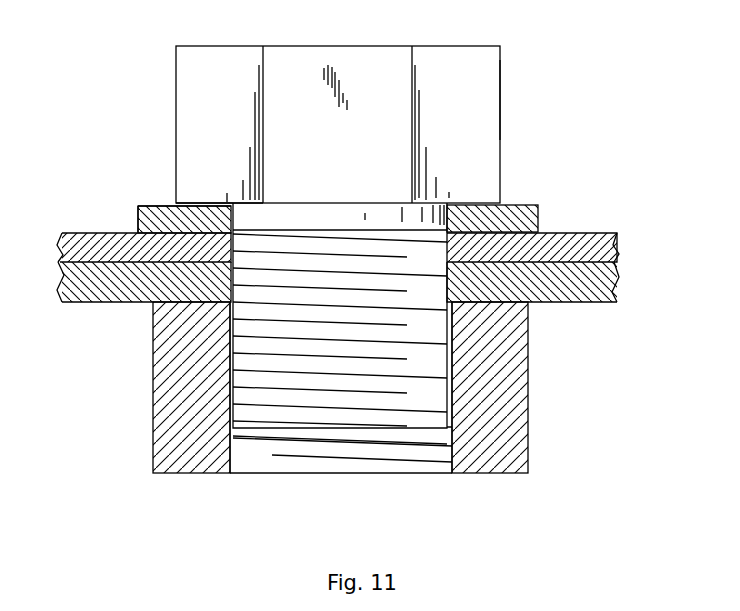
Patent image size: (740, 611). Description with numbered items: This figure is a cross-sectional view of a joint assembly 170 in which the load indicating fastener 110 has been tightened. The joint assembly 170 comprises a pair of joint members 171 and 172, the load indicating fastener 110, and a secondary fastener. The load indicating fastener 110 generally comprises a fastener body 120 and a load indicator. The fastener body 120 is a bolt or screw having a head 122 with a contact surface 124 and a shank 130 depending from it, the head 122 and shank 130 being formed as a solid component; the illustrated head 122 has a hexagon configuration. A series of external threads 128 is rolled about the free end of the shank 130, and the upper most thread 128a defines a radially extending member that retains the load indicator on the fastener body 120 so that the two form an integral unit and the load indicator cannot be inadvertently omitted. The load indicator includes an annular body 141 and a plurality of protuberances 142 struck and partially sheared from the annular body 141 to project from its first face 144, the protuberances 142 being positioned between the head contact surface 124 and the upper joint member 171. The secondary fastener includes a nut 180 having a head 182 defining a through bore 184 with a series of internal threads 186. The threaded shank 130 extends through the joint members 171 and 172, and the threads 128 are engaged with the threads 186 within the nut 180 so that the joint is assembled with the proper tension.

The load indicating fastener 110 is at (585, 137).
The fastener body 120 is at (504, 67).
The head 122 is at (498, 99).
The contact surface 124 is at (218, 202).
The external threads 128 is at (276, 412).
The upper most thread 128a is at (358, 228).
The shank 130 is at (405, 422).
The annular body 141 is at (140, 213).
The protuberances 142 is at (190, 206).
The first face 144 is at (148, 207).
The joint assembly 170 is at (363, 277).
The joint member 171 is at (596, 232).
The joint member 172 is at (612, 270).
The nut 180 is at (532, 420).
The head 182 is at (490, 475).
The through bore 184 is at (298, 470).
The internal threads 186 is at (341, 464).